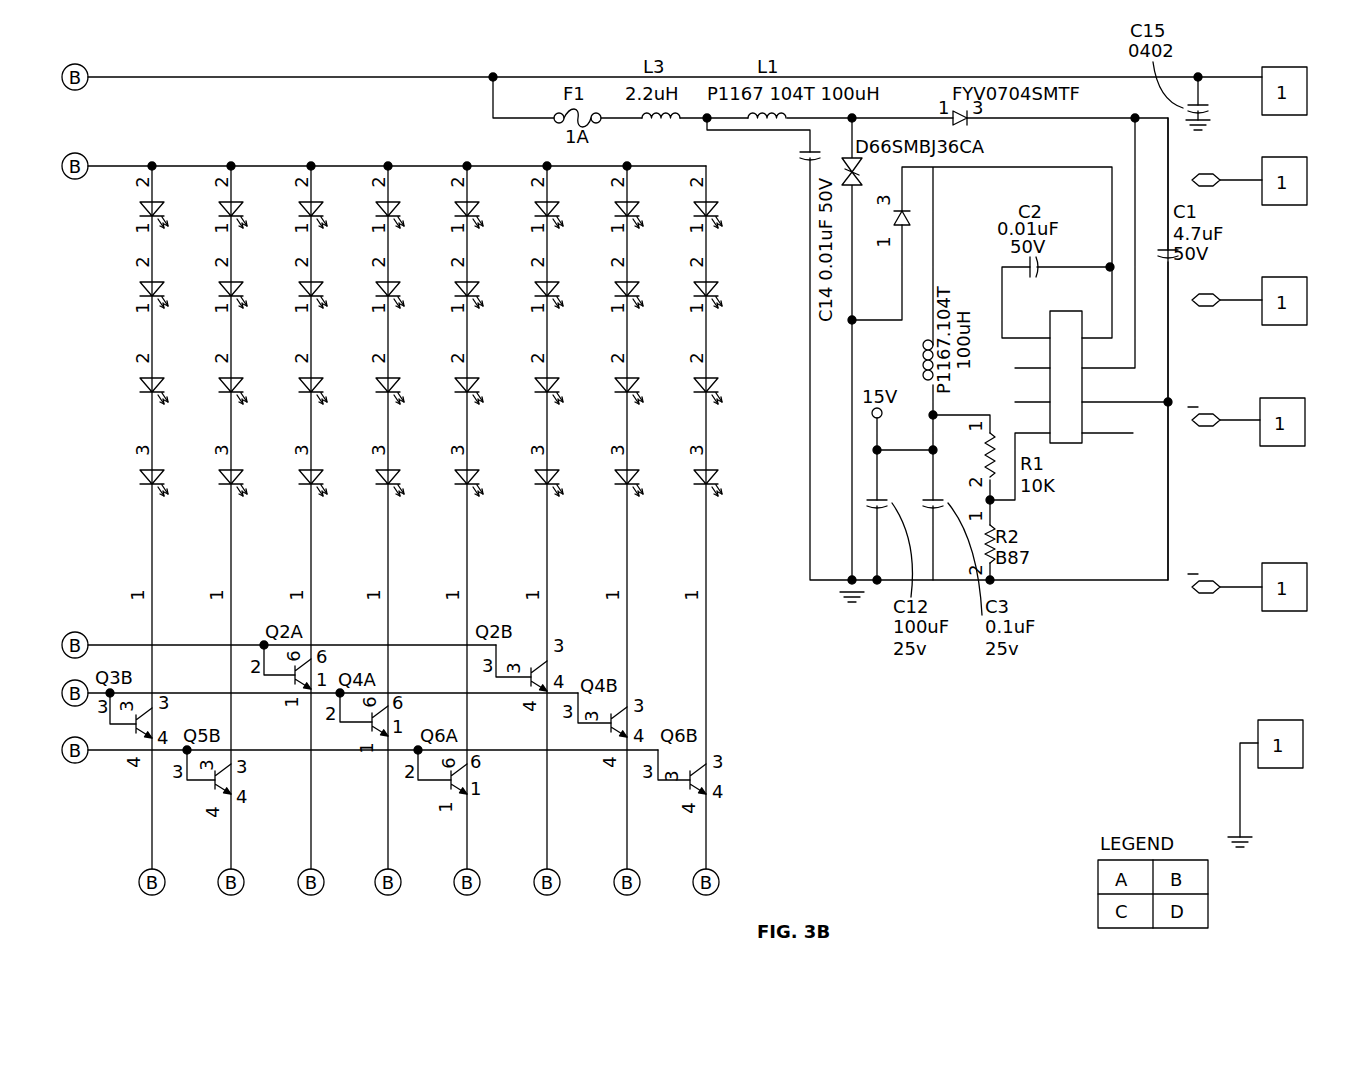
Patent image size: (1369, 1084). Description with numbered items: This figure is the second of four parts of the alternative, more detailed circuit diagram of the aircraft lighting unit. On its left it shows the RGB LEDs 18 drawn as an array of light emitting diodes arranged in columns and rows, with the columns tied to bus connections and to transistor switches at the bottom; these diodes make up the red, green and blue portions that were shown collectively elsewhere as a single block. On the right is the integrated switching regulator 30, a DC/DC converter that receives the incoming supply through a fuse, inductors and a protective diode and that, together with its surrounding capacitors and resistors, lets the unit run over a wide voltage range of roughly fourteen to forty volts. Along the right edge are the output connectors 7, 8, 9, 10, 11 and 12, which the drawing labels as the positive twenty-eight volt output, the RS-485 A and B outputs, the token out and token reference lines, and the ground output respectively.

The +28V OUT connector 7 is at (1311, 79).
The RS485A OUT connector 8 is at (1274, 171).
The RS485B OUT connector 9 is at (1274, 291).
The TOKEN OUT connector 10 is at (1246, 426).
The TOKEN REF connector 11 is at (1247, 570).
The GND OUT connector 12 is at (1288, 771).
The RGB LEDs 18 is at (766, 187).
The switching regulator 30 is at (1066, 377).